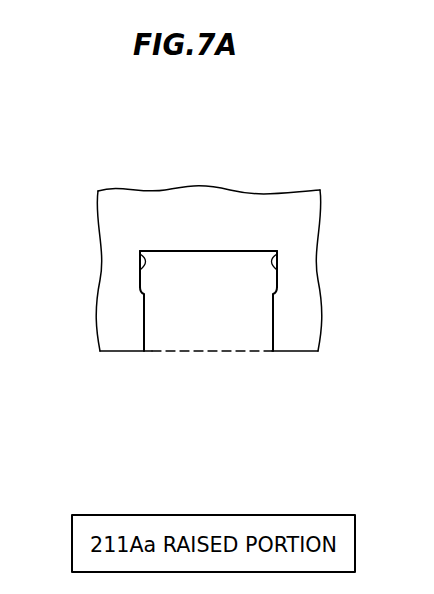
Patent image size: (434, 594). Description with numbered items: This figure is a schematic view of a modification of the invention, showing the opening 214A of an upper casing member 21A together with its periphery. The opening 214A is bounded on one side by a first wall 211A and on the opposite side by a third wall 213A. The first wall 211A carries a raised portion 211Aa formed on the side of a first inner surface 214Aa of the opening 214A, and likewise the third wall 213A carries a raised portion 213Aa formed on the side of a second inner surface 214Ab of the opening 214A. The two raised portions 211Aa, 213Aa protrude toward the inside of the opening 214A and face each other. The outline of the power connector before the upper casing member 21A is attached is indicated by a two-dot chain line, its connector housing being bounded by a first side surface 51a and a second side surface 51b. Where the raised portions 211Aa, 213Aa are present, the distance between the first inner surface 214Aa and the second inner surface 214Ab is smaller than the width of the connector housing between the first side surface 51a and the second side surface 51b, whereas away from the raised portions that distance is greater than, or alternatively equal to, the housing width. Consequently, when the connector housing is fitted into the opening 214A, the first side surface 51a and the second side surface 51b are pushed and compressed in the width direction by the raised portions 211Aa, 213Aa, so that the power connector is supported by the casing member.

The upper casing member 21A is at (212, 189).
The first wall 211A is at (123, 340).
The third wall 213A is at (297, 342).
The raised portion 211Aa is at (147, 298).
The first inner surface 214Aa is at (148, 253).
The second inner surface 214Ab is at (277, 256).
The first side surface 51a is at (143, 297).
The second side surface 51b is at (274, 296).
The raised portion 213Aa is at (272, 300).
The opening 214A is at (188, 333).